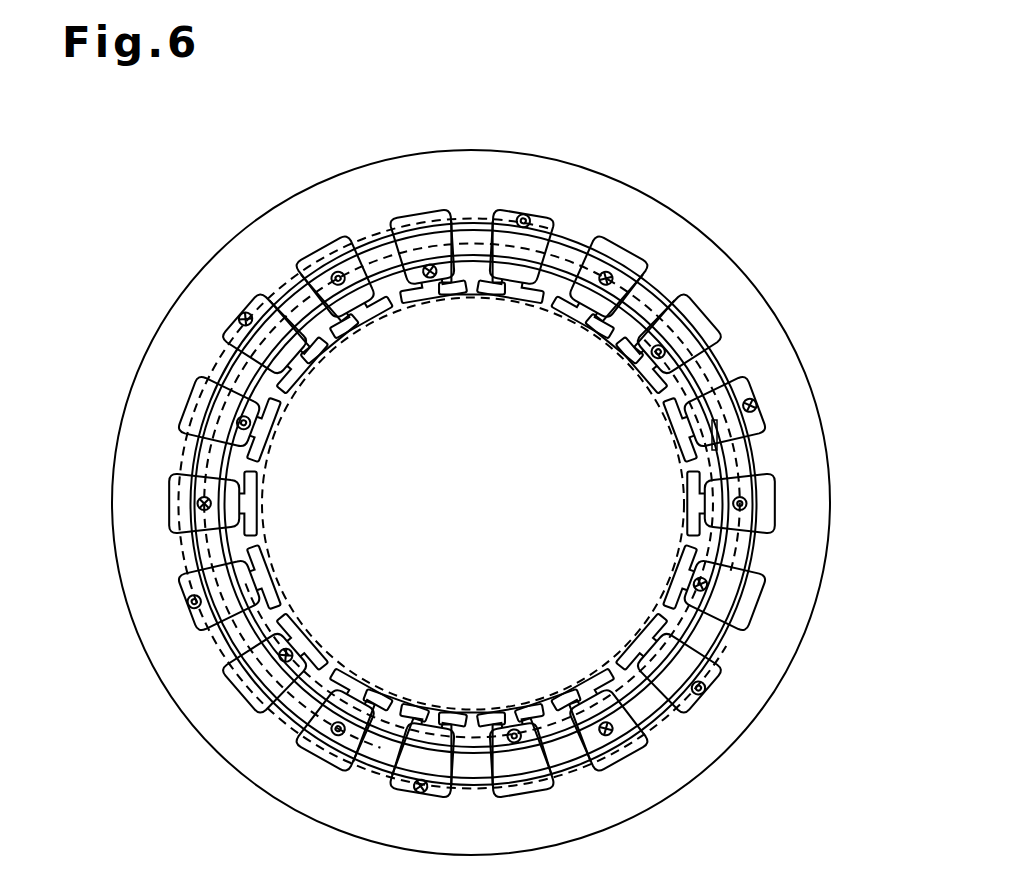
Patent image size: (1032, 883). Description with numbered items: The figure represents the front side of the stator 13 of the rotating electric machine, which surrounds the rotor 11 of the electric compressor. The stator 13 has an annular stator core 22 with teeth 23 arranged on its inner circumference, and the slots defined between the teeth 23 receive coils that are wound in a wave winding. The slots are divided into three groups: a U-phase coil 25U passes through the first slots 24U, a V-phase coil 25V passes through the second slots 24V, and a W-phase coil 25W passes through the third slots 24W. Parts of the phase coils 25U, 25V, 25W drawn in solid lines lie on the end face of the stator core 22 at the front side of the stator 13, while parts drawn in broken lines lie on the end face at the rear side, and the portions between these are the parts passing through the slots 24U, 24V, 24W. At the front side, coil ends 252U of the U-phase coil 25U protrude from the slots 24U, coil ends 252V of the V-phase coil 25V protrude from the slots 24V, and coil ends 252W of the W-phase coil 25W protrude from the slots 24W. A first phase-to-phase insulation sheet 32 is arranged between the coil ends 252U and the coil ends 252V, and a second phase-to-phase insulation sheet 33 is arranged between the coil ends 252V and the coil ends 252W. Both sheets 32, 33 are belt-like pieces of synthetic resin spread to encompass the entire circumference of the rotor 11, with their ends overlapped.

The stator 13 is at (691, 131).
The stator core 22 is at (814, 556).
The rotor 11 is at (262, 540).
The first phase-to-phase insulation sheet 32 is at (226, 361).
The second phase-to-phase insulation sheet 33 is at (236, 462).
The teeth 23 is at (660, 428).
The first slots 24U is at (525, 212).
The second slots 24V is at (335, 248).
The third slots 24W is at (418, 212).
The U-phase coil 25U is at (576, 236).
The V-phase coil 25V is at (178, 548).
The W-phase coil 25W is at (372, 318).
The coil ends 252U is at (473, 220).
The coil ends 252V is at (292, 292).
The coil ends 252W is at (590, 322).